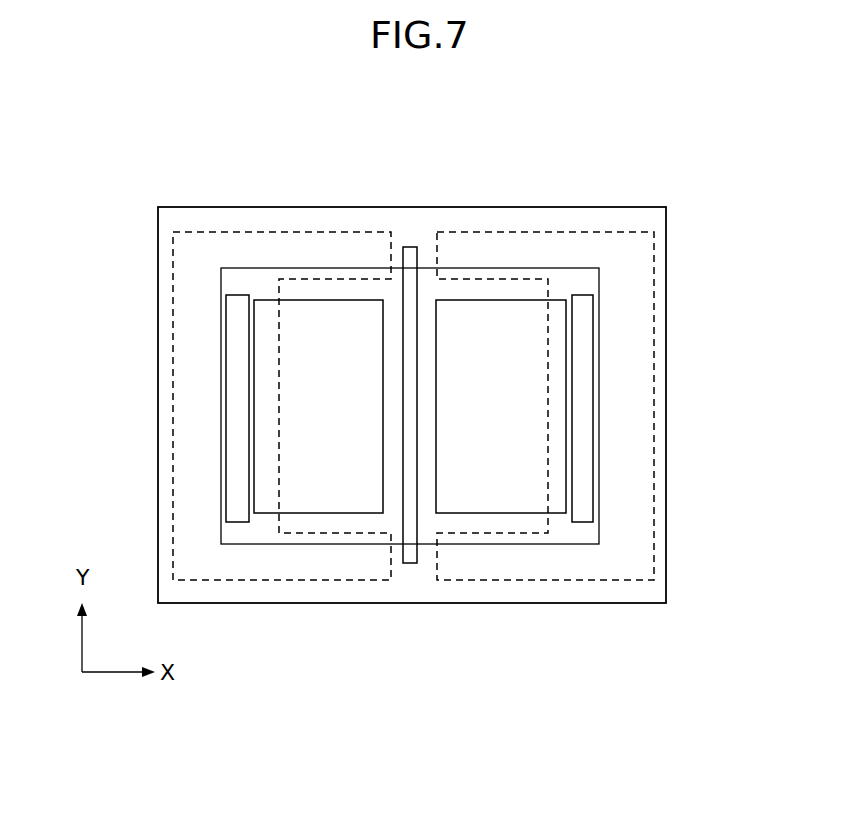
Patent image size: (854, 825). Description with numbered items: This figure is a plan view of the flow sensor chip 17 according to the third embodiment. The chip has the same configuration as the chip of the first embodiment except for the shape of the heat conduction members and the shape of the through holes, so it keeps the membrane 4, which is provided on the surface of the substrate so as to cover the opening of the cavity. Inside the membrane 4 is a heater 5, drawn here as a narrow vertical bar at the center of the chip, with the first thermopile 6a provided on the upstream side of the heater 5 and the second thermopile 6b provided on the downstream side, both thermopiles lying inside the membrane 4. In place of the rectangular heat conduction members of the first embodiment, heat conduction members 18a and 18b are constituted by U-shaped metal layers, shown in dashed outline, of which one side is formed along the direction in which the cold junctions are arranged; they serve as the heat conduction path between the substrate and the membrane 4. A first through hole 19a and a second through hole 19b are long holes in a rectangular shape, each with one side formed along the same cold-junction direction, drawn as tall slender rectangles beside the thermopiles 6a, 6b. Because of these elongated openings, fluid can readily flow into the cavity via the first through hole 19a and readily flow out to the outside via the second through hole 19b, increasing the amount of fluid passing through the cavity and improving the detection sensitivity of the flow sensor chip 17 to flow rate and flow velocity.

The flow sensor chip 17 is at (668, 170).
The membrane 4 is at (666, 300).
The heater 5 is at (403, 247).
The first thermopile 6a is at (326, 300).
The second thermopile 6b is at (508, 300).
The heat conduction member 18a is at (215, 232).
The heat conduction member 18b is at (611, 232).
The first through hole 19a is at (228, 445).
The second through hole 19b is at (593, 450).